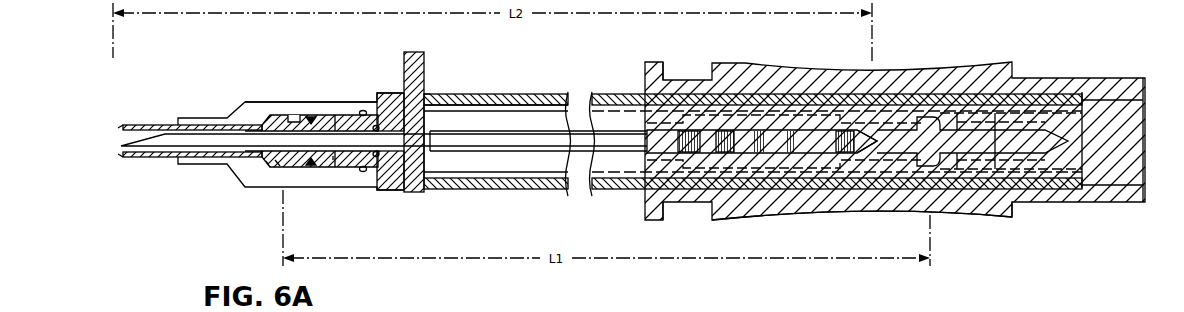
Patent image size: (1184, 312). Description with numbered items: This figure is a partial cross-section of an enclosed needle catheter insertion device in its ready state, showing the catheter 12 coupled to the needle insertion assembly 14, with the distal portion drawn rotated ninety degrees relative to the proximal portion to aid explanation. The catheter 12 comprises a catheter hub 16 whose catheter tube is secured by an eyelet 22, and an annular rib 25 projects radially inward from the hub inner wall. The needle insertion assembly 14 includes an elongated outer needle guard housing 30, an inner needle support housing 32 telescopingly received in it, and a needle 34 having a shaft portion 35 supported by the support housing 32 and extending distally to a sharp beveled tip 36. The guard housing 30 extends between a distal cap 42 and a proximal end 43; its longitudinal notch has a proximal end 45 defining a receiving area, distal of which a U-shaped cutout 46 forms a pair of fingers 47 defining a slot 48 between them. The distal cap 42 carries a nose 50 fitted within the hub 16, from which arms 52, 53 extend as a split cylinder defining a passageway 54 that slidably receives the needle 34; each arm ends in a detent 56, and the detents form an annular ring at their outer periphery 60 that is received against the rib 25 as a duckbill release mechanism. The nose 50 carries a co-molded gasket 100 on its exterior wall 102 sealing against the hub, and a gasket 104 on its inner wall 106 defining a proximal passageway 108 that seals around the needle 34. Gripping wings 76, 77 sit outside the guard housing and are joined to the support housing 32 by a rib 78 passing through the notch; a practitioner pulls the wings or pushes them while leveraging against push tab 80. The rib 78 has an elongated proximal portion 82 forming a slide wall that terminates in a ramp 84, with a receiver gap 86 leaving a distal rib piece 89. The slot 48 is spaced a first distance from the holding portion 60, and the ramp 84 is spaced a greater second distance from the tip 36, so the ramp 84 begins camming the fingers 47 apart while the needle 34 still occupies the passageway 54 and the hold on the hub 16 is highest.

The catheter 12 is at (240, 93).
The needle insertion assembly 14 is at (474, 78).
The catheter hub 16 is at (264, 103).
The eyelet 22 is at (236, 165).
The annular rib 25 is at (292, 116).
The outer needle guard housing 30 is at (553, 92).
The inner needle support housing 32 is at (682, 86).
The needle 34 is at (513, 127).
The shaft portion 35 is at (485, 136).
The sharp beveled distal tip 36 is at (155, 128).
The distal end or cap 42 is at (412, 62).
The proximal end 43 is at (1147, 204).
The proximal end of notch 45 is at (1033, 140).
The U-shaped slot detent cutout 46 is at (946, 124).
The fingers 47 is at (930, 120).
The slot 48 is at (948, 152).
The nose 50 is at (352, 170).
The arm 52 is at (312, 118).
The arm 53 is at (312, 165).
The passageway 54 is at (262, 133).
The detent 56 is at (272, 114).
The outer periphery 60 is at (278, 165).
The gripping wing 76 is at (863, 211).
The gripping wing 77 is at (750, 63).
The rib 78 is at (868, 138).
The push tab 80 is at (428, 66).
The elongated proximal portion 82 is at (793, 143).
The ramp or camming surface 84 is at (873, 148).
The receiver gap 86 is at (742, 143).
The distal rib piece 89 is at (703, 143).
The co-molded elastomeric gasket 100 is at (362, 110).
The exterior wall 102 is at (339, 125).
The co-molded elastomeric gasket 104 is at (377, 125).
The inner wall 106 is at (334, 158).
The proximal passageway 108 is at (367, 168).